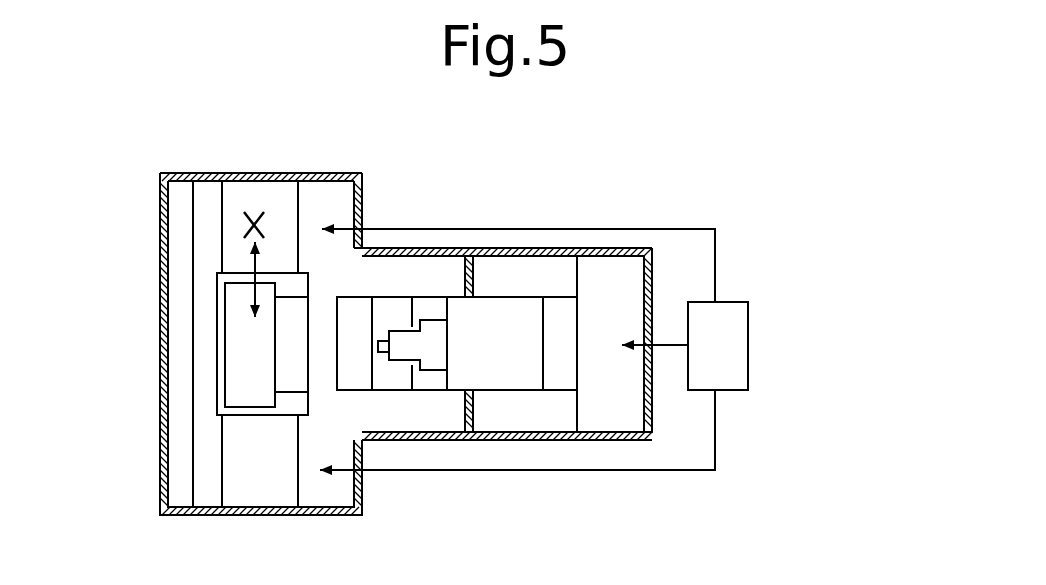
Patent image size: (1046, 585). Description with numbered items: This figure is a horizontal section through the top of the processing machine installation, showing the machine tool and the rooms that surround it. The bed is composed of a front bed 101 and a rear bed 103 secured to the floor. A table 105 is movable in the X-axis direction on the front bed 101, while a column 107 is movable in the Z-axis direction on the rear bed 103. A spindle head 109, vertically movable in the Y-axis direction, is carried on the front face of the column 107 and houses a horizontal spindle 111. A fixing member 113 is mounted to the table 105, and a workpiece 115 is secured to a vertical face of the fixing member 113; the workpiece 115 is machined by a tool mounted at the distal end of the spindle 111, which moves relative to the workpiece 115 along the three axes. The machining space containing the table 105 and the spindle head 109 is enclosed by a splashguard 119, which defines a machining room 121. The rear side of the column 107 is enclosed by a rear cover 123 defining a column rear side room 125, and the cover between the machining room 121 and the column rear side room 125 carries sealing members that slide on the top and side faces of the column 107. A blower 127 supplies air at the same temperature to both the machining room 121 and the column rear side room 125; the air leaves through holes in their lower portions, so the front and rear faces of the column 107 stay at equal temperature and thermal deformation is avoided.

The front bed 101 is at (263, 487).
The rear bed 103 is at (533, 413).
The table 105 is at (254, 418).
The column 107 is at (530, 358).
The spindle head 109 is at (432, 358).
The spindle 111 is at (385, 356).
The fixing member 113 is at (242, 363).
The workpiece 115 is at (296, 362).
The splashguard 119 is at (283, 173).
The machining room 121 is at (332, 284).
The rear cover 123 is at (595, 250).
The column rear side room 125 is at (632, 325).
The blower 127 is at (730, 335).